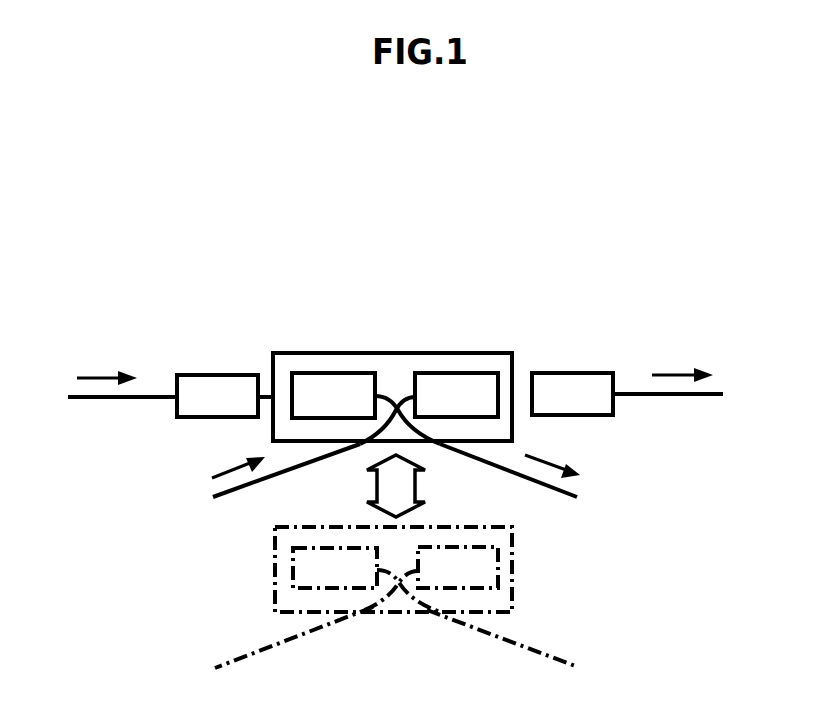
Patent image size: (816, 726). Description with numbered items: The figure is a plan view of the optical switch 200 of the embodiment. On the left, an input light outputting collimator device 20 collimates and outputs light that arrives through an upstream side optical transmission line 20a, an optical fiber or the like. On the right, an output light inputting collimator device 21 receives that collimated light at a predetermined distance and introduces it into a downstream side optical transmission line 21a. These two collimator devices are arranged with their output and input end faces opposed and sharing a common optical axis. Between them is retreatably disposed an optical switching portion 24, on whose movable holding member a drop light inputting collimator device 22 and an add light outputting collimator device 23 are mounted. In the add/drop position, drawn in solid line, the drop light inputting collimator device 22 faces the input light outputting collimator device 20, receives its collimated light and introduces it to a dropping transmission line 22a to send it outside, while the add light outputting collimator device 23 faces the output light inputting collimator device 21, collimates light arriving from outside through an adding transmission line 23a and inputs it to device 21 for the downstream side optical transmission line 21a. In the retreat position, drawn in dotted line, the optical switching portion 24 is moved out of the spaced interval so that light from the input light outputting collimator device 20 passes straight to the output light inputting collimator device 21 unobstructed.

The input light outputting collimator device 20 is at (222, 374).
The output light inputting collimator device 21 is at (585, 373).
The drop light inputting collimator device 22 is at (342, 373).
The add light outputting collimator device 23 is at (485, 373).
The optical switching portion 24 is at (392, 303).
The upstream side optical transmission line 20a is at (112, 398).
The downstream side optical transmission line 21a is at (675, 395).
The dropping transmission line 22a is at (556, 489).
The adding transmission line 23a is at (237, 492).
The optical switch 200 is at (692, 693).